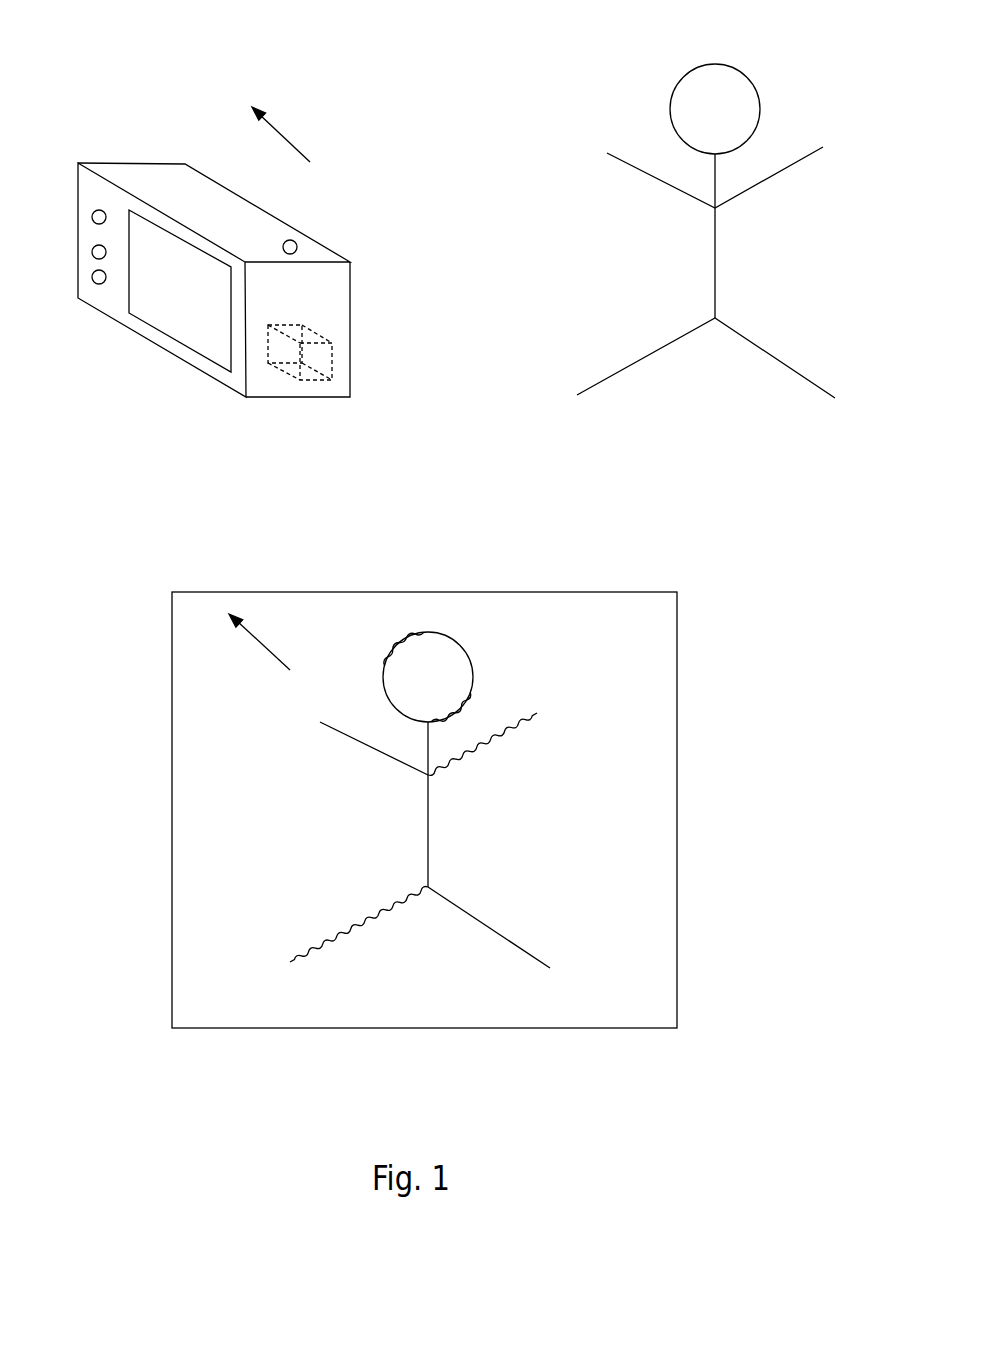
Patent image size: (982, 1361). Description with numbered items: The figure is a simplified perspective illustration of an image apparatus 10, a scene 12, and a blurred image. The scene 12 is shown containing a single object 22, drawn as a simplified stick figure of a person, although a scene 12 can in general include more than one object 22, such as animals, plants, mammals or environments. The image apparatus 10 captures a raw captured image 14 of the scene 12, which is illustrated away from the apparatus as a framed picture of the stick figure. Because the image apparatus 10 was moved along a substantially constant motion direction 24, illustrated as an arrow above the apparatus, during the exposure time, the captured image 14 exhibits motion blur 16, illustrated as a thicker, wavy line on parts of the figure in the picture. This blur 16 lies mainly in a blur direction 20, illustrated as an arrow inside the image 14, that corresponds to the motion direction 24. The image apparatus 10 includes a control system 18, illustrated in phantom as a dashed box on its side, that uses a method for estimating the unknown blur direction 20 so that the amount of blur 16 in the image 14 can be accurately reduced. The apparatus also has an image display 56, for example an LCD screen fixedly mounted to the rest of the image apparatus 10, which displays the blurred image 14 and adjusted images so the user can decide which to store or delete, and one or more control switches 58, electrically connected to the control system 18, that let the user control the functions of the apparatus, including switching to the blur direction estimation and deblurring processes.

The image apparatus 10 is at (176, 170).
The scene 12 is at (656, 207).
The raw captured image 14 is at (424, 821).
The motion blur 16 is at (418, 630).
The control system 18 is at (320, 362).
The blur direction 20 is at (257, 637).
The object 22 is at (712, 66).
The motion direction 24 is at (287, 139).
The image display 56 is at (180, 315).
The control switches 58 is at (97, 282).